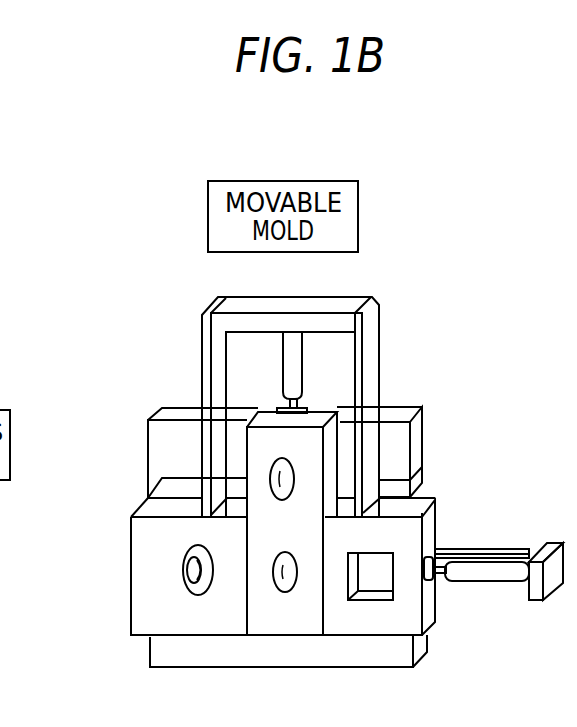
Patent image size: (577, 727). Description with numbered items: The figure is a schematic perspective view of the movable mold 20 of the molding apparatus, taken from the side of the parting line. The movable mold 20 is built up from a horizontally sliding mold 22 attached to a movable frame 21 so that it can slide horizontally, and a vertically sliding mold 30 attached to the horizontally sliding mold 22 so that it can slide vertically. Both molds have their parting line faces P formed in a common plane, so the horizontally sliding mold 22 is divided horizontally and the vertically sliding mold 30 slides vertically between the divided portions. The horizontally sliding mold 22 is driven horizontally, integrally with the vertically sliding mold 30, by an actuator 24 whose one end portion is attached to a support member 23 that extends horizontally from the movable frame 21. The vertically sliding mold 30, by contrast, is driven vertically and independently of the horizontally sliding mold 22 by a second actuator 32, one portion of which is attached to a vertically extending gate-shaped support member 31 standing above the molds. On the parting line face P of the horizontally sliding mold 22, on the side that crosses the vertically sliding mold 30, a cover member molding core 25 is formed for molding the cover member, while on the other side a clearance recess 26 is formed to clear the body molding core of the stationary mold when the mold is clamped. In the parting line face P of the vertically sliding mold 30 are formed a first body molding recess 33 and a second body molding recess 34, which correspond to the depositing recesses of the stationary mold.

The movable mold 20 is at (421, 217).
The movable frame 21 is at (382, 488).
The horizontally sliding mold 22 is at (437, 513).
The support member 23 is at (505, 547).
The actuator 24 is at (495, 577).
The cover member molding core 25 is at (183, 573).
The clearance recess 26 is at (373, 580).
The vertically sliding mold 30 is at (308, 450).
The gate-shaped support member 31 is at (375, 312).
The actuator 32 is at (297, 367).
The first body molding recess 33 is at (270, 474).
The second body molding recess 34 is at (288, 588).
The parting line face P is at (143, 559).